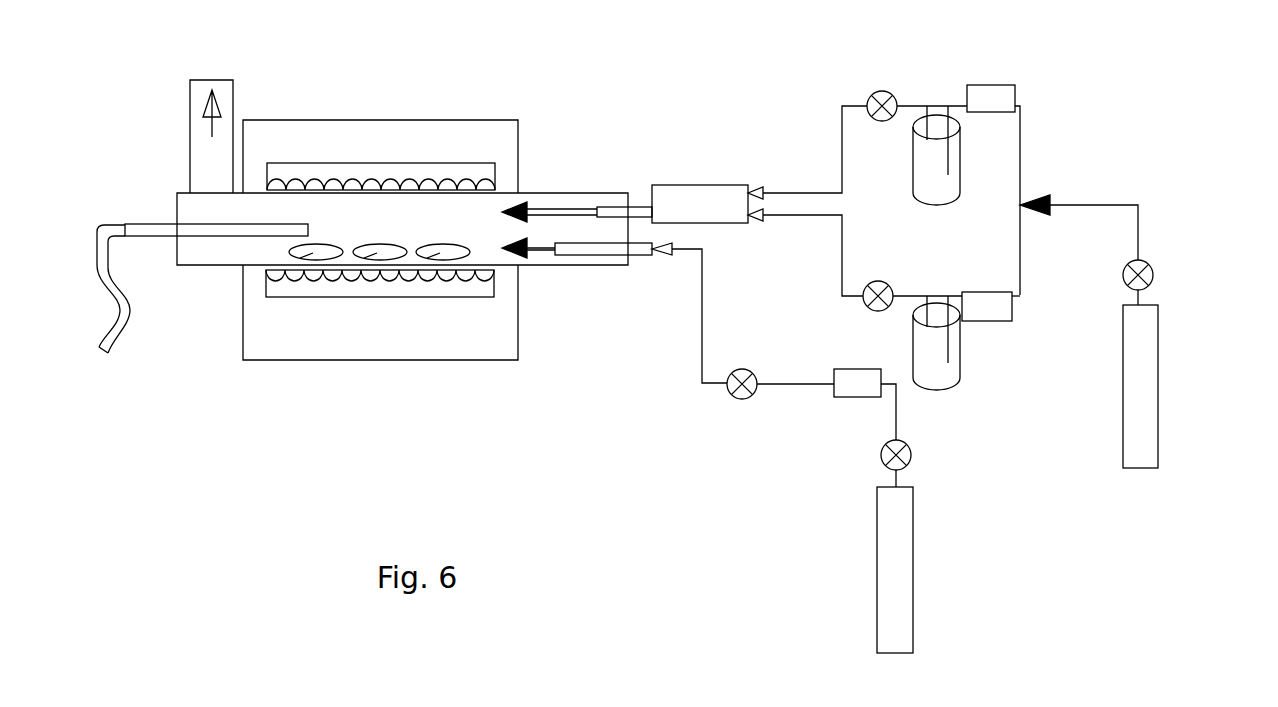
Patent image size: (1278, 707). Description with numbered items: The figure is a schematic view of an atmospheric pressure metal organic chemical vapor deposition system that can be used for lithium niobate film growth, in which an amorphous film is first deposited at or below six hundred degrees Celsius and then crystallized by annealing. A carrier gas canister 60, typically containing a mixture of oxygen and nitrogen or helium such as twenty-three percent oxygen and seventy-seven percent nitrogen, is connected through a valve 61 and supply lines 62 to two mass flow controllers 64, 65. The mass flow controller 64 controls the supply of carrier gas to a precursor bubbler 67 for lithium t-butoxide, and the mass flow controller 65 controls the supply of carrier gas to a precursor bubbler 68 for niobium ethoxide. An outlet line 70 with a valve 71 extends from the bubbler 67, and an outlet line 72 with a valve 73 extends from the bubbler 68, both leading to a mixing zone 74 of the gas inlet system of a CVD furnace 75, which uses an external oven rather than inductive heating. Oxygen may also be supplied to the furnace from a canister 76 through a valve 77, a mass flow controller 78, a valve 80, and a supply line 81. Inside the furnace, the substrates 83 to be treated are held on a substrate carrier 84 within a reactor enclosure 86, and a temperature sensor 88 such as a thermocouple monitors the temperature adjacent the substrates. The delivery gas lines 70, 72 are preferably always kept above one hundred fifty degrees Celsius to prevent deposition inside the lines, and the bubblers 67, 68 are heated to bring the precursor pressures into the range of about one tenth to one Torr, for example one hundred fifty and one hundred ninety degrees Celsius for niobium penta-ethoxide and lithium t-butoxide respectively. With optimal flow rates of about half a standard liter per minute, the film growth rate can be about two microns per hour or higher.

The carrier gas canister 60 is at (1158, 432).
The valve 61 is at (1157, 270).
The supply lines 62 is at (1100, 200).
The mass flow controller 64 is at (992, 85).
The mass flow controller 65 is at (1013, 322).
The precursor bubbler 67 is at (913, 193).
The precursor bubbler 68 is at (960, 375).
The outlet line 70 is at (840, 143).
The valve 71 is at (880, 121).
The outlet line 72 is at (842, 273).
The valve 73 is at (890, 282).
The mixing zone 74 is at (633, 205).
The CVD furnace 75 is at (500, 120).
The canister 76 is at (915, 552).
The valve 77 is at (910, 458).
The mass flow controller 78 is at (858, 369).
The valve 80 is at (741, 369).
The supply line 81 is at (702, 315).
The substrates 83 is at (422, 257).
The substrate carrier 84 is at (445, 281).
The reactor enclosure 86 is at (387, 163).
The temperature sensor 88 is at (150, 228).